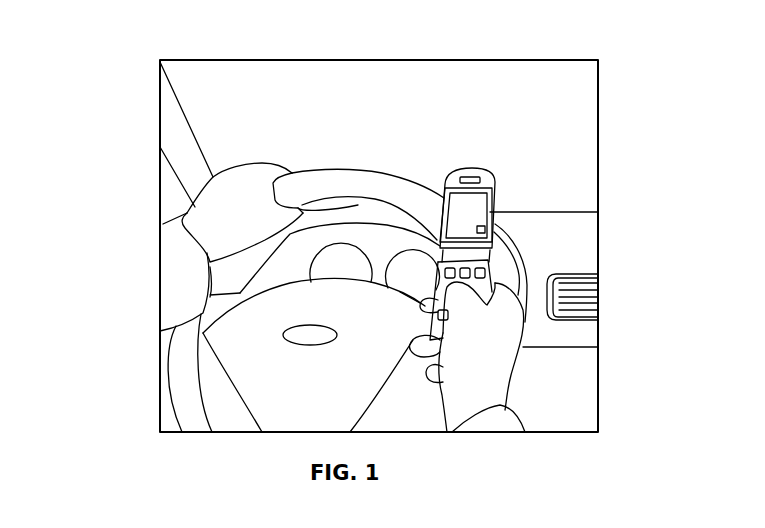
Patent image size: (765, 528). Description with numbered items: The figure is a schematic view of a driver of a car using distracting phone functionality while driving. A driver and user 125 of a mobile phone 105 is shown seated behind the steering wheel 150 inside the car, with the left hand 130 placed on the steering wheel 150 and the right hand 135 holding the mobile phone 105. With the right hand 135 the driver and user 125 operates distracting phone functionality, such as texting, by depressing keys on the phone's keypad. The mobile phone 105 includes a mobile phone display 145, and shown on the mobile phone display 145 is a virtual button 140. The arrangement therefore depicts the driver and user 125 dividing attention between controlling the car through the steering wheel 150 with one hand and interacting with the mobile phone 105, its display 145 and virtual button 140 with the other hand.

The mobile phone 105 is at (546, 213).
The driver and user 125 is at (185, 272).
The left hand 130 is at (187, 208).
The right hand 135 is at (513, 370).
The virtual button 140 is at (486, 230).
The mobile phone display 145 is at (490, 203).
The steering wheel 150 is at (328, 172).